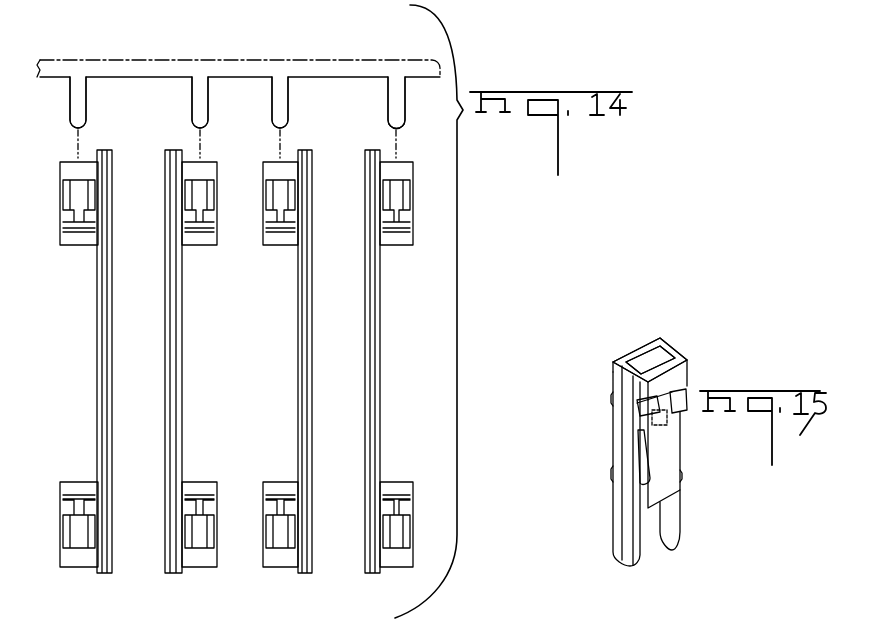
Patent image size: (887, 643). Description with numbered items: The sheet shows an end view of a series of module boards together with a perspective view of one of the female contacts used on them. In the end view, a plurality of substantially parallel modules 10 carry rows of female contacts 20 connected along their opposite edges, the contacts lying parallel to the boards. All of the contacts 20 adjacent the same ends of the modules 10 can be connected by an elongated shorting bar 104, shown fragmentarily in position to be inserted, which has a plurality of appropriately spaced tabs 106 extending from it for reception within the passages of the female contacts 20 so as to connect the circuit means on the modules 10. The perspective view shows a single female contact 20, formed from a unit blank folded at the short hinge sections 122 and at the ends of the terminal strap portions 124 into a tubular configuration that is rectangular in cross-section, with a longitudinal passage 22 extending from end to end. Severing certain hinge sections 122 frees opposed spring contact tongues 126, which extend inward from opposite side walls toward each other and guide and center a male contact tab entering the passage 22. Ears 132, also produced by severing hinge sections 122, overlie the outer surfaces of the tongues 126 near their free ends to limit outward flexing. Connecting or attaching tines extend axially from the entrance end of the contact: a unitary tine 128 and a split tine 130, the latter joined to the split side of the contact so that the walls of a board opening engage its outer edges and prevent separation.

In FIG. 14, the module 10 is at (97, 397).
In FIG. 14, the female contact 20 is at (78, 240).
In FIG. 15, the female contact 20 is at (652, 432).
In FIG. 15, the longitudinal passage 22 is at (651, 368).
In FIG. 14, the shorting bar 104 is at (255, 58).
In FIG. 14, the tab 106 is at (86, 118).
In FIG. 15, the short hinge section 122 is at (682, 480).
In FIG. 15, the terminal strap portion 124 is at (626, 355).
In FIG. 15, the spring contact tongue 126 is at (668, 446).
In FIG. 15, the unitary tine 128 is at (682, 522).
In FIG. 15, the split tine 130 is at (616, 545).
In FIG. 15, the ear 132 is at (684, 400).